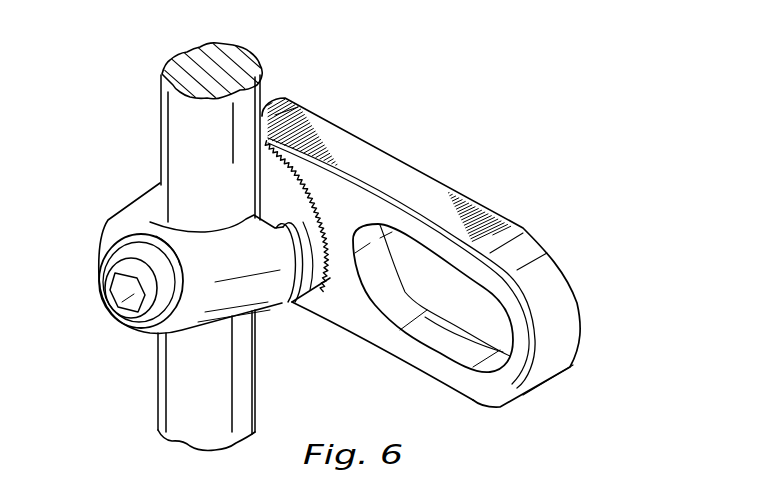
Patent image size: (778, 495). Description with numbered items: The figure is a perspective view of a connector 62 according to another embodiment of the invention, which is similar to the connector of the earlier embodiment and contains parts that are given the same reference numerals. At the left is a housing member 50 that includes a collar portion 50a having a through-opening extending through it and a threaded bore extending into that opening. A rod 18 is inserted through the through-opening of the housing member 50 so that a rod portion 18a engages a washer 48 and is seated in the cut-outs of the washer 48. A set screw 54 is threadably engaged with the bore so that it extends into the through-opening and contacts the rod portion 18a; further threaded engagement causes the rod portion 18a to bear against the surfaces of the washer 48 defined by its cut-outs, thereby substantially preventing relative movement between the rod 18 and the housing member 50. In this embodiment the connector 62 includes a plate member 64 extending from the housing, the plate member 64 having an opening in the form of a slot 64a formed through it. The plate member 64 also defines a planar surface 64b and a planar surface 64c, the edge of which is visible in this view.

The rod 18 is at (157, 391).
The rod portion 18a is at (233, 201).
The housing member 50 is at (172, 258).
The collar portion 50a is at (247, 262).
The set screw 54 is at (105, 292).
The washer 48 is at (286, 203).
The connector 62 is at (466, 252).
The plate member 64 is at (579, 333).
The slot 64a is at (447, 345).
The planar surface 64b is at (358, 320).
The planar surface 64c is at (441, 180).